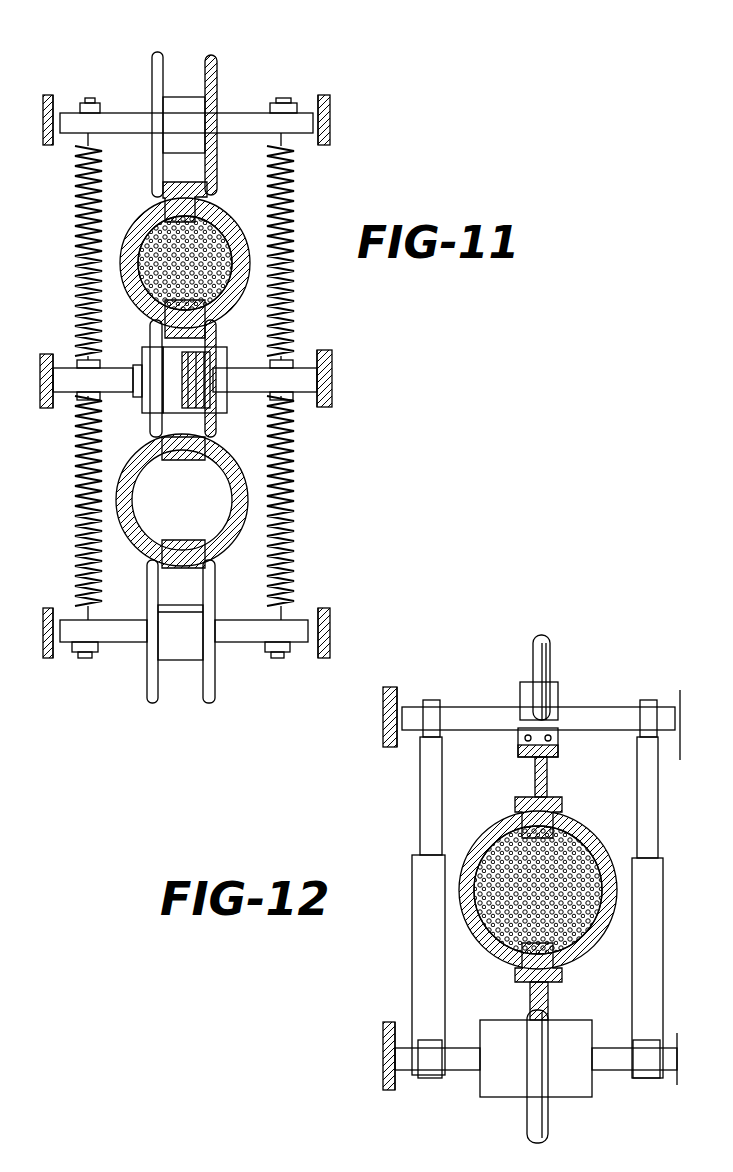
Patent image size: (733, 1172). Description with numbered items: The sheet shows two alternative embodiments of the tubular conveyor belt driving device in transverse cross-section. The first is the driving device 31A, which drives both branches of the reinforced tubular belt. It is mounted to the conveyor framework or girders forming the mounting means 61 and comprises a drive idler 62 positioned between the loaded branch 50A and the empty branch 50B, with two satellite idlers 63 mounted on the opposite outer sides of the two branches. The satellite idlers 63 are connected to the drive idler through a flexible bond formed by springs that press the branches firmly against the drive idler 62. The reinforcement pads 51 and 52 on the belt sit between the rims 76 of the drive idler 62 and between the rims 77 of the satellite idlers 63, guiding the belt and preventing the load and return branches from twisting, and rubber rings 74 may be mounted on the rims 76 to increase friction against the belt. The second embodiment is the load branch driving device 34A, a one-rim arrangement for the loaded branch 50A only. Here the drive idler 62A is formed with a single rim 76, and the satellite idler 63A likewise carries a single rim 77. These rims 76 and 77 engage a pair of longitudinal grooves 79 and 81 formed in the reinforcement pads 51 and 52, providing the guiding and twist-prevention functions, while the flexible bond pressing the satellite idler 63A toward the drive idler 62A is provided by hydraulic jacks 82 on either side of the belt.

In FIG. 11, the driving device 31A is at (262, 45).
In FIG. 12, the load branch driving device 34A is at (532, 625).
In FIG. 11, the loaded branch of the belt 50A is at (150, 256).
In FIG. 12, the loaded branch of the belt 50A is at (503, 852).
In FIG. 11, the empty branch of the belt 50B is at (140, 510).
In FIG. 11, the reinforcement pad 51 is at (203, 183).
In FIG. 12, the reinforcement pad 51 is at (527, 825).
In FIG. 11, the reinforcement pad 52 is at (190, 315).
In FIG. 12, the reinforcement pad 52 is at (527, 967).
In FIG. 11, the mounting means 61 is at (333, 630).
In FIG. 11, the drive idler 62 is at (143, 340).
In FIG. 12, the drive idler 62A is at (518, 1100).
In FIG. 11, the satellite idler 63 is at (213, 668).
In FIG. 11, the satellite idler 63A is at (220, 100).
In FIG. 12, the satellite idler 63A is at (557, 703).
In FIG. 11, the rubber ring 74 is at (153, 423).
In FIG. 11, the rim of the drive idler 76 is at (220, 423).
In FIG. 12, the rim of the drive idler 76 is at (547, 1115).
In FIG. 11, the rim of the satellite idler 77 is at (158, 52).
In FIG. 12, the rim of the satellite idler 77 is at (550, 668).
In FIG. 12, the longitudinal groove 79 is at (525, 800).
In FIG. 12, the longitudinal groove 81 is at (550, 972).
In FIG. 12, the hydraulic jack 82 is at (417, 940).